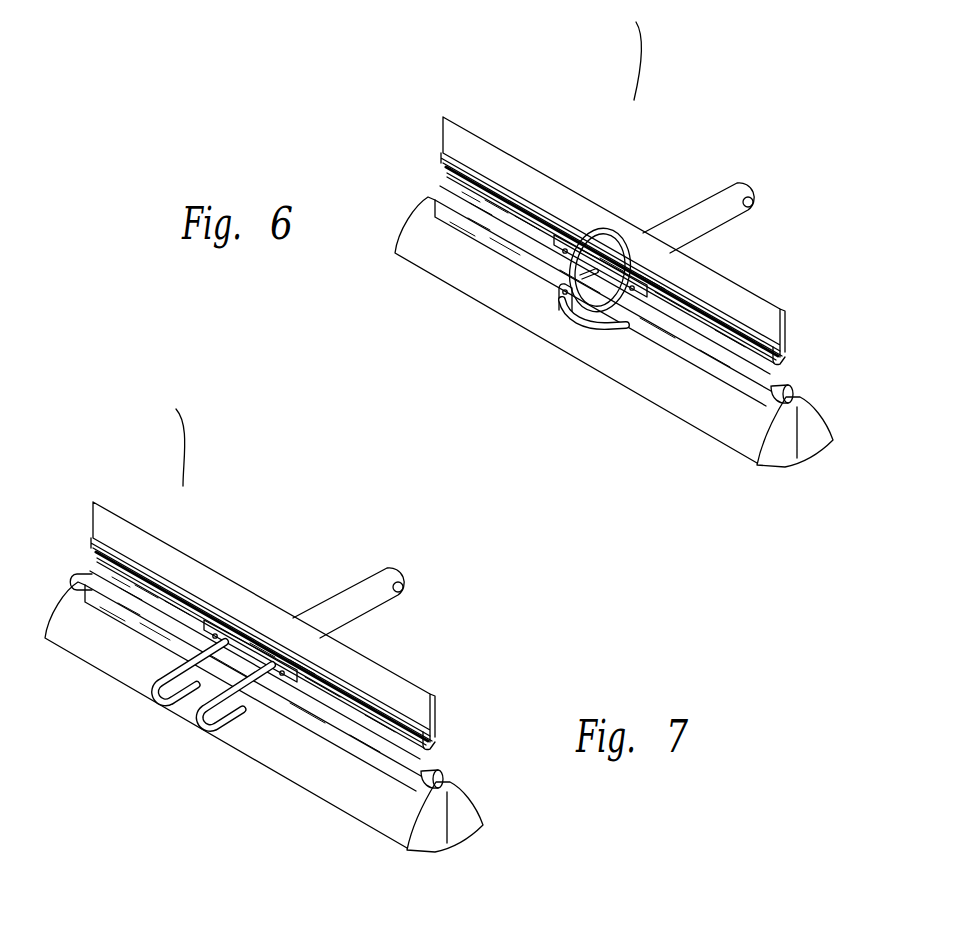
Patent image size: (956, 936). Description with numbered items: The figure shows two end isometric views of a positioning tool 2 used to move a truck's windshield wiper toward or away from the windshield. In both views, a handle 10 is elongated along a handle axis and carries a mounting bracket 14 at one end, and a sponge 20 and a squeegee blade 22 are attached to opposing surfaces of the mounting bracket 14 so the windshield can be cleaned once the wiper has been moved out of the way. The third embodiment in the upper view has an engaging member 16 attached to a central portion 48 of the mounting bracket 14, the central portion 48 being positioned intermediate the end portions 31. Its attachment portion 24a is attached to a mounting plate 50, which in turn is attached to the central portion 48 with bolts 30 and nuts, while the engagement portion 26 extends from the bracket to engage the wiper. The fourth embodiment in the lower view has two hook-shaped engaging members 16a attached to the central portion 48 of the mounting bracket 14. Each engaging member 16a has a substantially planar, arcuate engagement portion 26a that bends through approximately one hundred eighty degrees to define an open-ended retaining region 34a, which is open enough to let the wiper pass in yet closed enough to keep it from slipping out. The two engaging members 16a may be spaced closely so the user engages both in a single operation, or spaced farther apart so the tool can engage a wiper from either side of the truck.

In FIG. 6, the positioning tool 2 is at (631, 56).
In FIG. 7, the positioning tool 2 is at (172, 444).
In FIG. 6, the handle 10 is at (702, 200).
In FIG. 7, the handle 10 is at (371, 578).
In FIG. 6, the mounting bracket 14 is at (447, 170).
In FIG. 7, the mounting bracket 14 is at (86, 562).
In FIG. 6, the engaging member 16 is at (588, 334).
In FIG. 7, the hook-shaped engaging member 16a is at (142, 688).
In FIG. 6, the sponge 20 is at (767, 470).
In FIG. 7, the sponge 20 is at (465, 841).
In FIG. 6, the squeegee blade 22 is at (521, 162).
In FIG. 7, the squeegee blade 22 is at (436, 719).
In FIG. 6, the attachment portion 24a is at (593, 233).
In FIG. 6, the engagement portion 26 is at (568, 318).
In FIG. 7, the arcuate engagement portion 26a is at (153, 707).
In FIG. 6, the bolts 30 is at (565, 256).
In FIG. 7, the bolts 30 is at (282, 677).
In FIG. 6, the end portion 31 is at (440, 186).
In FIG. 7, the end portion 31 is at (92, 583).
In FIG. 7, the retaining region 34a is at (172, 713).
In FIG. 6, the central portion 48 is at (549, 256).
In FIG. 7, the central portion 48 is at (196, 624).
In FIG. 6, the mounting plate 50 is at (650, 293).
In FIG. 7, the mounting plate 50 is at (247, 628).